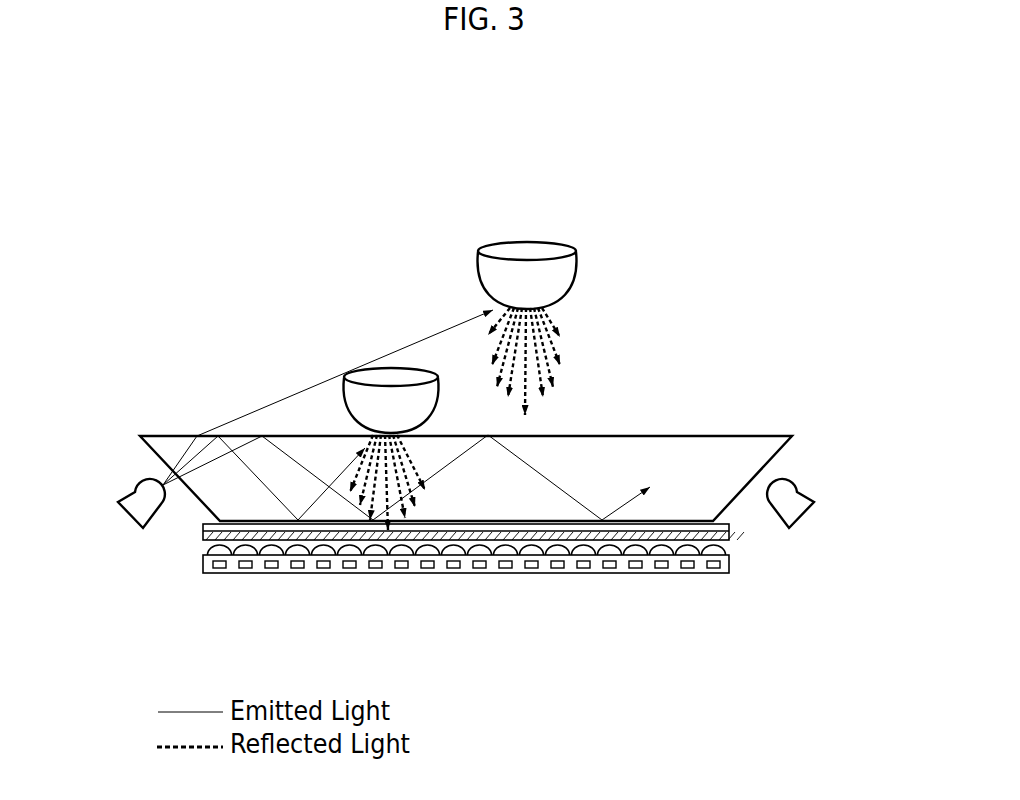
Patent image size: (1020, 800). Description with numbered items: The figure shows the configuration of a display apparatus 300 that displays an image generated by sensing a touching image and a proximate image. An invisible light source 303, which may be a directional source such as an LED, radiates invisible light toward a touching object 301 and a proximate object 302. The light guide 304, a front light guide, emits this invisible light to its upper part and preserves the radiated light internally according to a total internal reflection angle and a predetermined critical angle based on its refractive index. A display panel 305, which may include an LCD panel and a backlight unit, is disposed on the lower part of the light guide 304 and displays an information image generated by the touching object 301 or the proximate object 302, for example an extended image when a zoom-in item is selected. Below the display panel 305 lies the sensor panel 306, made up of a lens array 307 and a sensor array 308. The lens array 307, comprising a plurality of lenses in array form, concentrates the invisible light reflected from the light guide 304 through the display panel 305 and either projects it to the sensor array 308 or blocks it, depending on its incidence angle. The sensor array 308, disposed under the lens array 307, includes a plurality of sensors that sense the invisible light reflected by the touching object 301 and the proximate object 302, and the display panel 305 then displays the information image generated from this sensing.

The display apparatus 300 is at (498, 131).
The touching object 301 is at (393, 370).
The proximate object 302 is at (531, 244).
The invisible light source 303 is at (133, 492).
The light guide 304 is at (662, 447).
The display panel 305 is at (731, 534).
The sensor panel 306 is at (468, 590).
The lens array 307 is at (210, 550).
The sensor array 308 is at (466, 595).